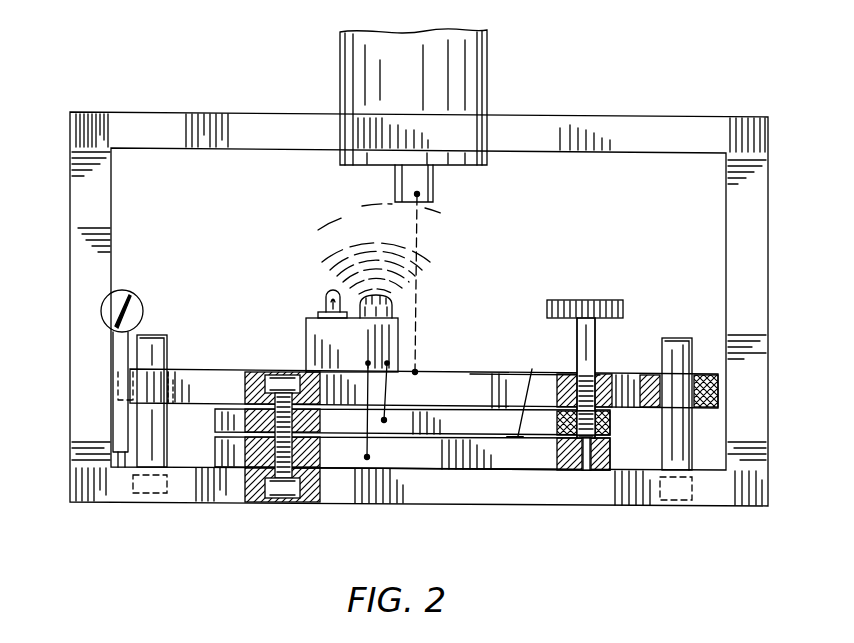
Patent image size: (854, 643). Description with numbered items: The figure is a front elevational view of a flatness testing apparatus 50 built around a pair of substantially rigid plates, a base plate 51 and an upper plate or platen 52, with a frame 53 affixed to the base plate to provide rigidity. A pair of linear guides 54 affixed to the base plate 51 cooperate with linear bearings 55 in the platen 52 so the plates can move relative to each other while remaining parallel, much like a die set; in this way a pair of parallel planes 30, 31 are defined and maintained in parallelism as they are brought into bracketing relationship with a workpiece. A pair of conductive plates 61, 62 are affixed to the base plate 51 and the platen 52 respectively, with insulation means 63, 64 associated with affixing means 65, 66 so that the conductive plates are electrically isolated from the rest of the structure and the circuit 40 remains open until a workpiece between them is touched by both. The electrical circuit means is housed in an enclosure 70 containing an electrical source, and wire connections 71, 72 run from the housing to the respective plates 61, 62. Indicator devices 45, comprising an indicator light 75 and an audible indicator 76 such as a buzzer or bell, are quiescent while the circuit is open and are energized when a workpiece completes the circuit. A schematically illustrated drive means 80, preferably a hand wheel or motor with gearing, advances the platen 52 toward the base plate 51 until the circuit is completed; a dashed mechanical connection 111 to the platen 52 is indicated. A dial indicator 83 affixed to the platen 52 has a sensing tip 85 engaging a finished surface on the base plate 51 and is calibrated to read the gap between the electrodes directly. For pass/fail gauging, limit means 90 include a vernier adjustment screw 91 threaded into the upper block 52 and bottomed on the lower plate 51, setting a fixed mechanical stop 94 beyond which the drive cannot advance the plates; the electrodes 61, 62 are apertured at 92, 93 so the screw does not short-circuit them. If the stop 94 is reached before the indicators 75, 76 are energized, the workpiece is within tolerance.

The circuit 40 is at (574, 54).
The drive means 80 is at (488, 88).
The flatness testing apparatus 50 is at (272, 205).
The frame 53 is at (71, 234).
The dial indicator 83 is at (100, 304).
The linear guides 54 is at (158, 335).
The platen 52 is at (198, 370).
The linear bearings 55 is at (172, 405).
The sensing tip 85 is at (124, 468).
The indicator devices 45 is at (320, 276).
The indicator light 75 is at (325, 292).
The enclosure 70 is at (306, 322).
The audible indicator 76 is at (392, 313).
The mechanical connection 111 is at (416, 256).
The affixing means 66 is at (280, 375).
The insulation means 64 is at (475, 374).
The parallel plane 31 is at (532, 390).
The parallel plane 30 is at (516, 440).
The vernier adjustment screw 91 is at (612, 300).
The aperture 92 is at (612, 425).
The aperture 93 is at (612, 457).
The limit means 90 is at (583, 472).
The mechanical stop 94 is at (585, 471).
The base plate 51 is at (605, 504).
The insulation means 63 is at (482, 471).
The affixing means 65 is at (282, 500).
The conductive plate 62 is at (482, 432).
The conductive plate 61 is at (420, 464).
The wire connection 72 is at (366, 420).
The wire connection 71 is at (386, 393).